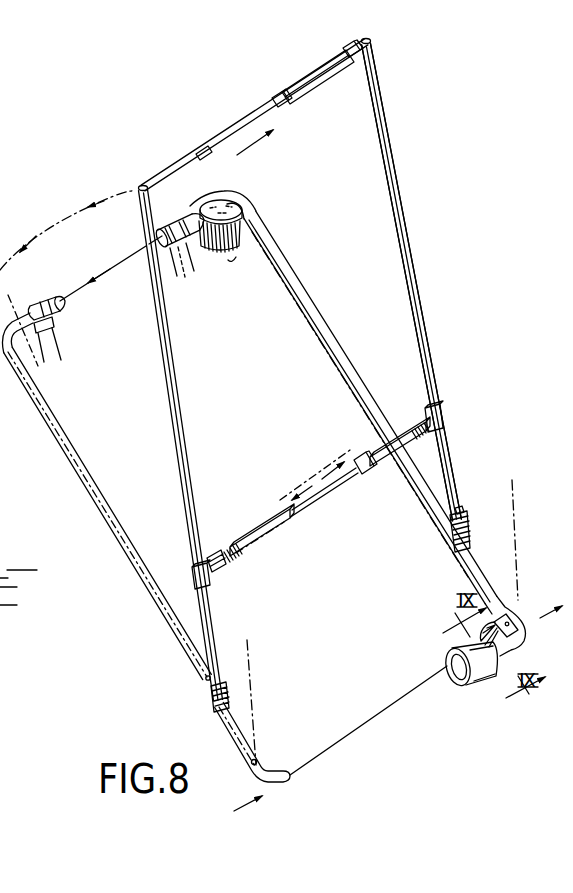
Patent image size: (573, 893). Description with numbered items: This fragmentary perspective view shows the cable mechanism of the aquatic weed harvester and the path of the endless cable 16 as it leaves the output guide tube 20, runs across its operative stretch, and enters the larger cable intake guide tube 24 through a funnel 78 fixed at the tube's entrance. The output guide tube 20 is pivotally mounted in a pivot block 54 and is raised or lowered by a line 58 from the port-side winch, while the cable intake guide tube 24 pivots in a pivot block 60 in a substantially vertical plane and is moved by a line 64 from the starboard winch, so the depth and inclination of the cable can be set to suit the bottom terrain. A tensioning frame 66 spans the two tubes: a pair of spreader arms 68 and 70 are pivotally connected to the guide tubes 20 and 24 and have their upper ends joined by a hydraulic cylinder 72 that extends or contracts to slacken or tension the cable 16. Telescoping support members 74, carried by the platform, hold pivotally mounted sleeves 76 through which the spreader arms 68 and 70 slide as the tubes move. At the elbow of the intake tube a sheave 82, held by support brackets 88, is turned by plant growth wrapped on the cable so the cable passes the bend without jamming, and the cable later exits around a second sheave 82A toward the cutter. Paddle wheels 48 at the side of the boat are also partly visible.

The endless cable 16 is at (86, 286).
The output guide tube 20 is at (97, 487).
The cable intake guide tube 24 is at (296, 289).
The paddle wheels 48 is at (0, 560).
The pivot block 54 is at (51, 324).
The cable or line 58 is at (252, 667).
The pivot block 60 is at (196, 255).
The cable or line 64 is at (514, 548).
The tensioning frame 66 is at (408, 159).
The spreader arm 68 is at (177, 376).
The spreader arm 70 is at (416, 261).
The hydraulic cylinder 72 is at (304, 94).
The telescoping support members 74 is at (276, 510).
The sleeves 76 is at (190, 578).
The funnel 78 is at (446, 668).
The sheave 82 is at (493, 600).
The second sheave 82A is at (240, 258).
The support brackets 88 is at (528, 628).